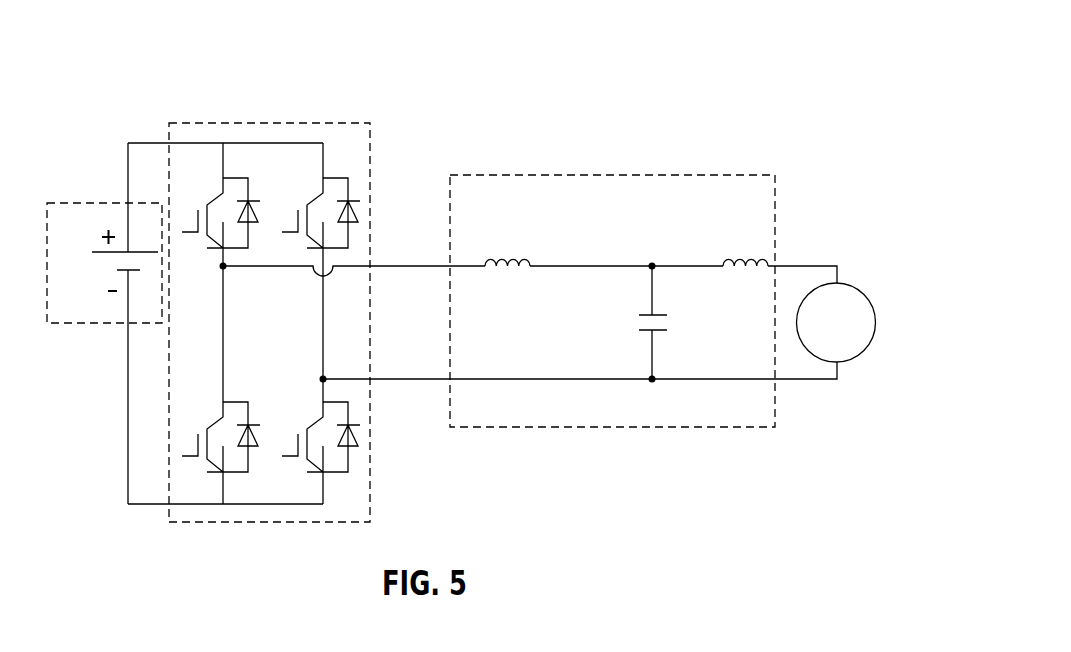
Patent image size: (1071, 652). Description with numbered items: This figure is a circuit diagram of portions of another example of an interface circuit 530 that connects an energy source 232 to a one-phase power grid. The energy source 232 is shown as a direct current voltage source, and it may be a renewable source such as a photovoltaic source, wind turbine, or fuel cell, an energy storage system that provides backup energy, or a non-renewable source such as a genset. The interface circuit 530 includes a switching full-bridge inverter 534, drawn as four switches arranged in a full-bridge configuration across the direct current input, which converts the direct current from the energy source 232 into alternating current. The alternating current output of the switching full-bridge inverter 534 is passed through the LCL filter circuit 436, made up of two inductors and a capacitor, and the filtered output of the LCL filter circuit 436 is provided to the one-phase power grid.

The interface circuit 530 is at (747, 53).
The switching full-bridge inverter 534 is at (240, 122).
The energy source 232 is at (117, 202).
The LCL filter circuit 436 is at (700, 175).